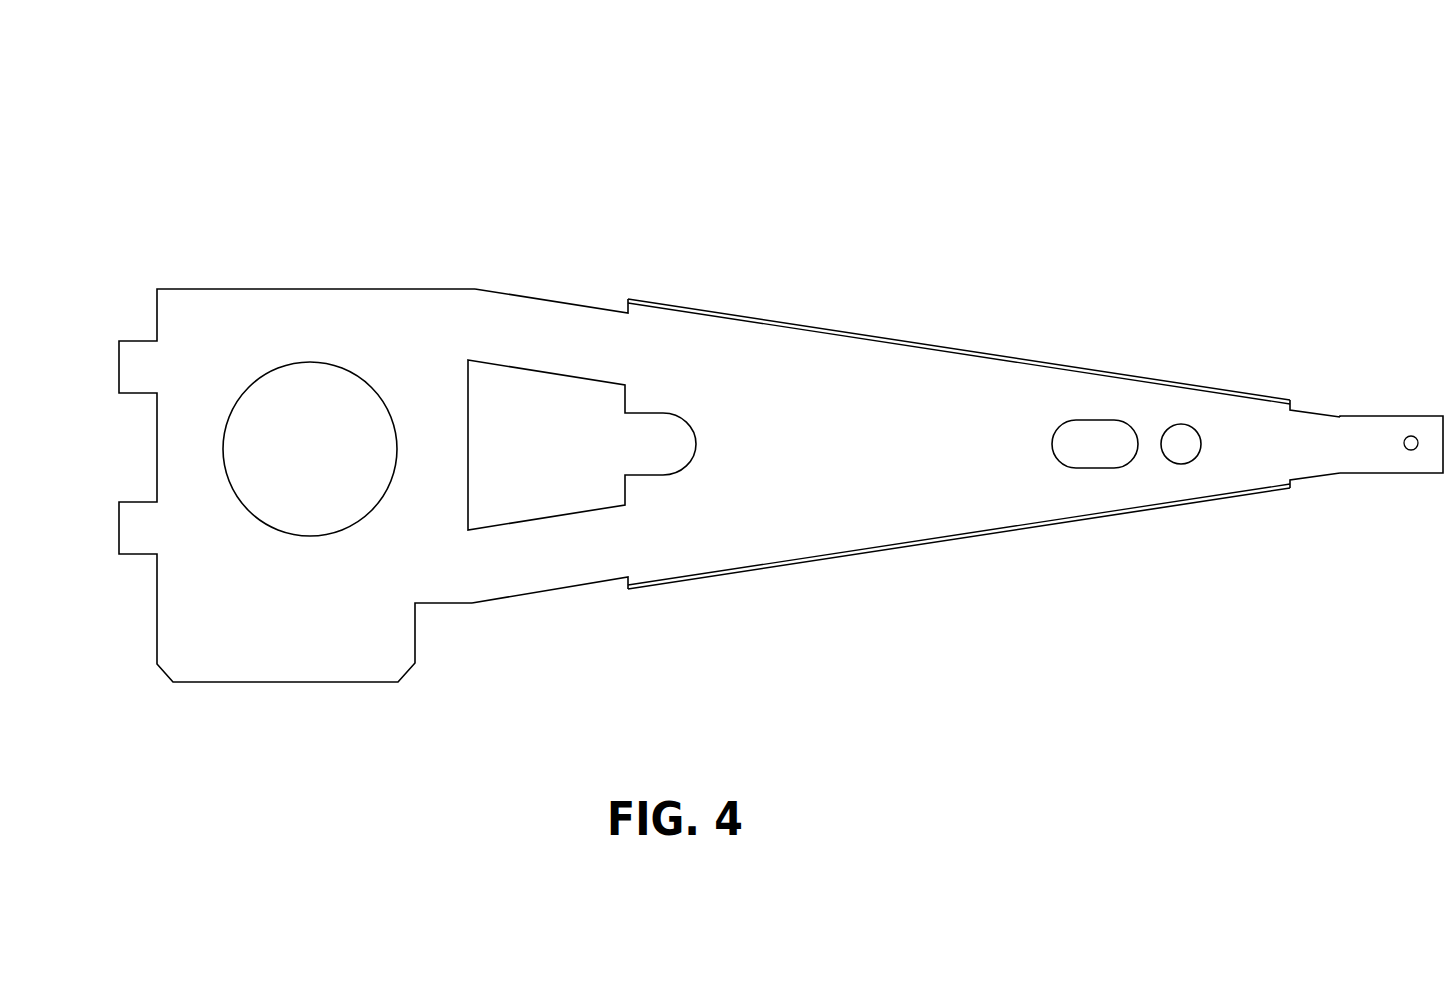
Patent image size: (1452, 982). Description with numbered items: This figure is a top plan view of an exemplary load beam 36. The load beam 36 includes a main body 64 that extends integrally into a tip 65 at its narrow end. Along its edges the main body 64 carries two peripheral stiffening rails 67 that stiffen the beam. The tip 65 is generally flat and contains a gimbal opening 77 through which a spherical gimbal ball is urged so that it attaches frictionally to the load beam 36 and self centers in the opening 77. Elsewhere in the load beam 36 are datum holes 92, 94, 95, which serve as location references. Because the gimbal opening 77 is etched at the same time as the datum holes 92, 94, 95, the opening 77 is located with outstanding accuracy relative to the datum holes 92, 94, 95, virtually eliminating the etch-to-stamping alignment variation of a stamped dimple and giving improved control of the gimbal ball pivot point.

The load beam 36 is at (822, 85).
The main body 64 is at (918, 377).
The tip 65 is at (1338, 428).
The peripheral stiffening rails 67 is at (669, 300).
The gimbal opening 77 is at (1408, 452).
The datum hole 92 is at (1185, 447).
The datum hole 94 is at (1098, 452).
The datum hole 95 is at (666, 475).